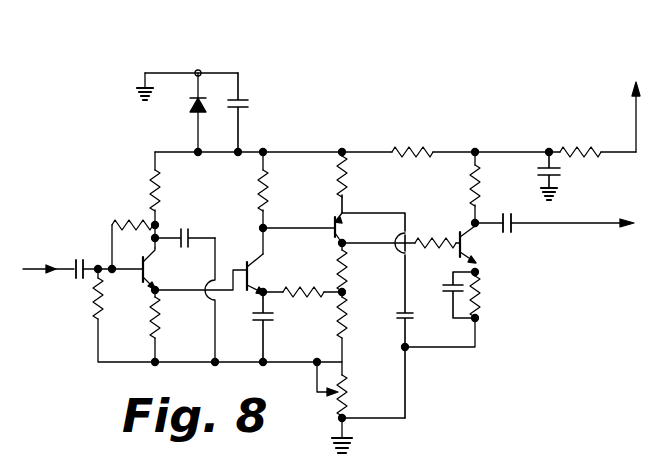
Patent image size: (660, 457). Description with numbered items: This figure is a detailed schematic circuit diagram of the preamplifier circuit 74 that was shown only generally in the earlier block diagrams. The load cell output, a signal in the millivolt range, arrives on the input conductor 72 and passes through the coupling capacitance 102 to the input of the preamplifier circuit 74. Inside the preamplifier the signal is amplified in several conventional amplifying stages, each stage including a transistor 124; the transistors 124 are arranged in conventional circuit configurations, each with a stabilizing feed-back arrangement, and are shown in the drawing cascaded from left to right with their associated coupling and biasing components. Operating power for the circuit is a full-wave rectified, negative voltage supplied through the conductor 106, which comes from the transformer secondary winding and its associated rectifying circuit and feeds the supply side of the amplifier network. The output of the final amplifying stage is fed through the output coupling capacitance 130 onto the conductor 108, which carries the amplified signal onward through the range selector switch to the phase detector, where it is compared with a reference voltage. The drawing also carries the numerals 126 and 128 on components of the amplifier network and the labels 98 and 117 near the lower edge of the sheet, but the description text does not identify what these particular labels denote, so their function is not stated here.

The preamplifier circuit 74 is at (372, 121).
The conductor 72 is at (70, 264).
The coupling capacitance 102 is at (83, 280).
The transistor 124 is at (151, 268).
The supply bus line 126 is at (274, 156).
The resistor 128 is at (151, 181).
The coupling capacitance 130 is at (506, 236).
The conductor 106 is at (632, 118).
The conductor 108 is at (577, 227).
The line 98 is at (0, 452).
The line 117 is at (619, 447).